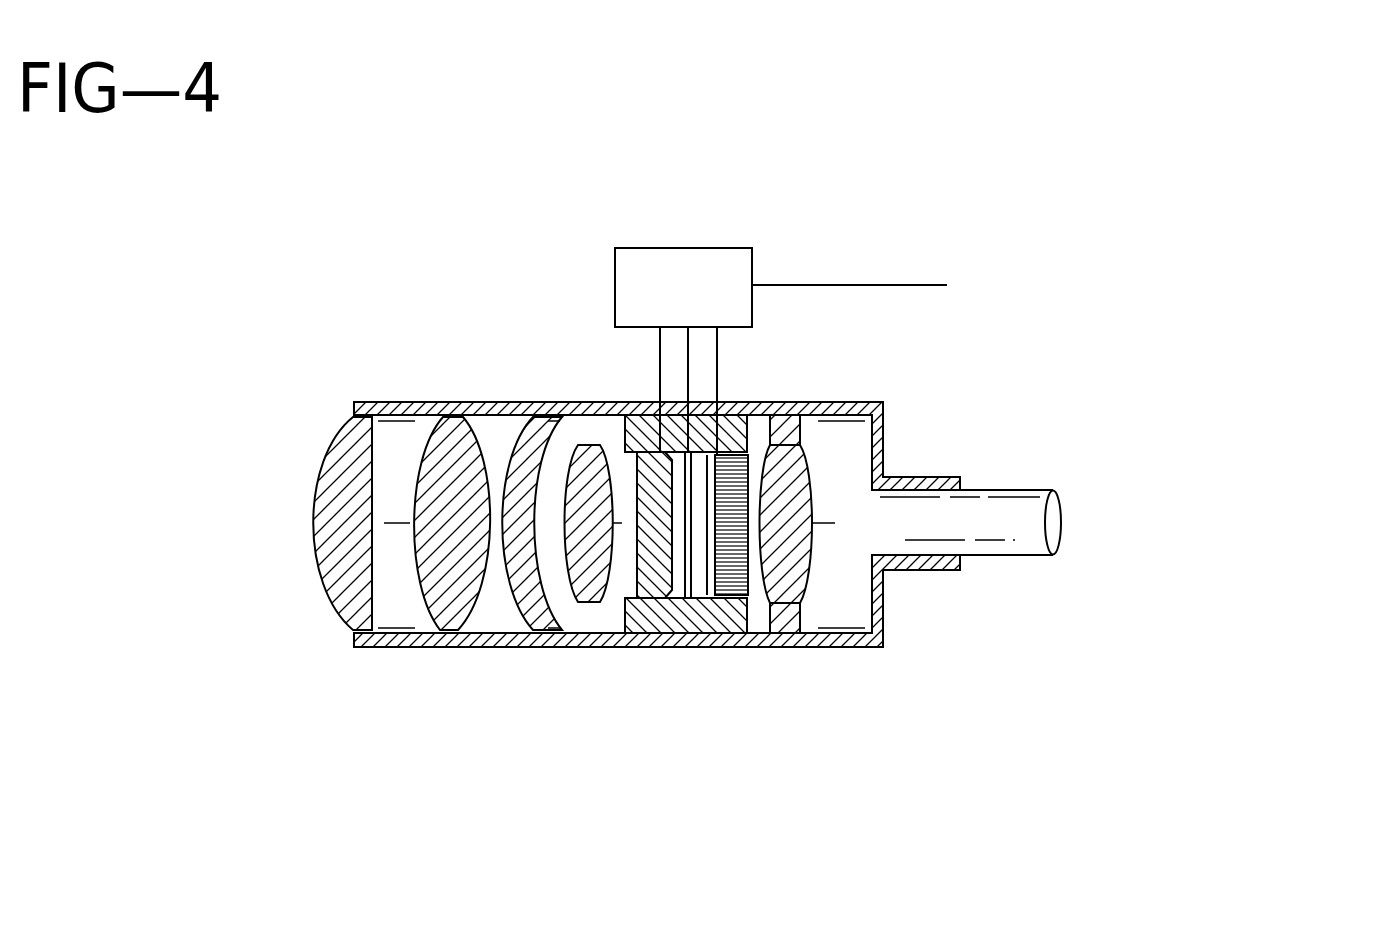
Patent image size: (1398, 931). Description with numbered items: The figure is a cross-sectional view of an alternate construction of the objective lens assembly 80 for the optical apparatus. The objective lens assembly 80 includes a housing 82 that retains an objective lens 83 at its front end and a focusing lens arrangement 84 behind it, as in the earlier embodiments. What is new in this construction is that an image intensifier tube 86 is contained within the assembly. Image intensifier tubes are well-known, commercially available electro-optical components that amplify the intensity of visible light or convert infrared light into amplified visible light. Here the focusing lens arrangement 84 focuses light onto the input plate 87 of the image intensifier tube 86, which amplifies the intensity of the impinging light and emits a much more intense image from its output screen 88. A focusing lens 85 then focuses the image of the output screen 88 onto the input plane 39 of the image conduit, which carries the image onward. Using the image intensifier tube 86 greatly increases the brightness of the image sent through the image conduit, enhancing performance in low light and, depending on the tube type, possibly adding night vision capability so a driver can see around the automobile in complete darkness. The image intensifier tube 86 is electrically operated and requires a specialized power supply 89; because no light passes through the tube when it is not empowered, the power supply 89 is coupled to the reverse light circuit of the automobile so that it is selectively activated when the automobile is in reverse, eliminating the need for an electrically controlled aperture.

The objective lens assembly 80 is at (392, 322).
The housing 82 is at (487, 646).
The objective lens 83 is at (323, 588).
The focusing lens arrangement 84 is at (577, 440).
The focusing lens 85 is at (808, 468).
The image intensifier tube 86 is at (697, 652).
The input plate 87 is at (650, 600).
The output screen 88 is at (748, 563).
The power supply 89 is at (682, 247).
The input plane of the image conduit 39 is at (871, 519).